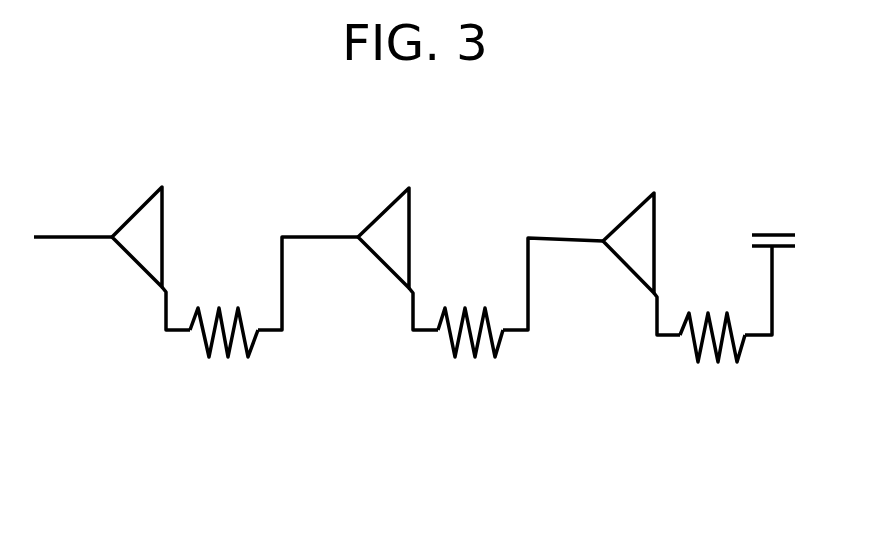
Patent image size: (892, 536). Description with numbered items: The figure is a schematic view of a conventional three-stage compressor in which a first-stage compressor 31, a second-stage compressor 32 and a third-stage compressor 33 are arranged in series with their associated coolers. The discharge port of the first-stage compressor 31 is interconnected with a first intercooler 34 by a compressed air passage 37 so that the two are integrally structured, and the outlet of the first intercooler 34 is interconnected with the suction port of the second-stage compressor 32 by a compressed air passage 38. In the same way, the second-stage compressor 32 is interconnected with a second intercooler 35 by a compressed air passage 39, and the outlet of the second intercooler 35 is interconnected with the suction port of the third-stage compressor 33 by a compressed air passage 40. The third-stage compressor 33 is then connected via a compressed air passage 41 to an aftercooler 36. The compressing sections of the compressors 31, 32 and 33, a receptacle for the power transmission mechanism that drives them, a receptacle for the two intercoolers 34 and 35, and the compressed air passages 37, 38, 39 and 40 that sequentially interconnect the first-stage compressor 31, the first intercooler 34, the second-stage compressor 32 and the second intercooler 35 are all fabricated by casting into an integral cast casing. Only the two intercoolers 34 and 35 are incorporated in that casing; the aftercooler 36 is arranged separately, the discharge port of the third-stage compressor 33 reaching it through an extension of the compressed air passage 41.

The first-stage compressor 31 is at (137, 210).
The second-stage compressor 32 is at (385, 208).
The third-stage compressor 33 is at (633, 207).
The first intercooler 34 is at (220, 310).
The second intercooler 35 is at (467, 313).
The aftercooler 36 is at (712, 312).
The compressed air passage 37 is at (165, 310).
The compressed air passage 38 is at (318, 242).
The compressed air passage 39 is at (408, 310).
The compressed air passage 40 is at (563, 242).
The compressed air passage 41 is at (655, 315).